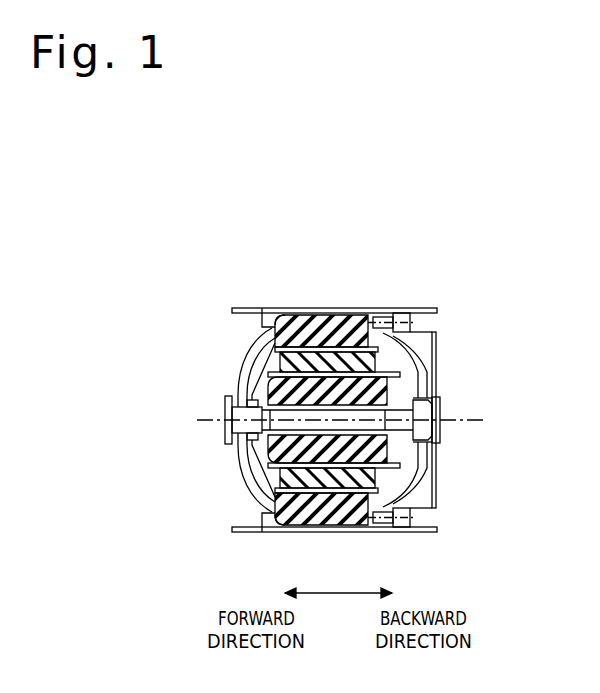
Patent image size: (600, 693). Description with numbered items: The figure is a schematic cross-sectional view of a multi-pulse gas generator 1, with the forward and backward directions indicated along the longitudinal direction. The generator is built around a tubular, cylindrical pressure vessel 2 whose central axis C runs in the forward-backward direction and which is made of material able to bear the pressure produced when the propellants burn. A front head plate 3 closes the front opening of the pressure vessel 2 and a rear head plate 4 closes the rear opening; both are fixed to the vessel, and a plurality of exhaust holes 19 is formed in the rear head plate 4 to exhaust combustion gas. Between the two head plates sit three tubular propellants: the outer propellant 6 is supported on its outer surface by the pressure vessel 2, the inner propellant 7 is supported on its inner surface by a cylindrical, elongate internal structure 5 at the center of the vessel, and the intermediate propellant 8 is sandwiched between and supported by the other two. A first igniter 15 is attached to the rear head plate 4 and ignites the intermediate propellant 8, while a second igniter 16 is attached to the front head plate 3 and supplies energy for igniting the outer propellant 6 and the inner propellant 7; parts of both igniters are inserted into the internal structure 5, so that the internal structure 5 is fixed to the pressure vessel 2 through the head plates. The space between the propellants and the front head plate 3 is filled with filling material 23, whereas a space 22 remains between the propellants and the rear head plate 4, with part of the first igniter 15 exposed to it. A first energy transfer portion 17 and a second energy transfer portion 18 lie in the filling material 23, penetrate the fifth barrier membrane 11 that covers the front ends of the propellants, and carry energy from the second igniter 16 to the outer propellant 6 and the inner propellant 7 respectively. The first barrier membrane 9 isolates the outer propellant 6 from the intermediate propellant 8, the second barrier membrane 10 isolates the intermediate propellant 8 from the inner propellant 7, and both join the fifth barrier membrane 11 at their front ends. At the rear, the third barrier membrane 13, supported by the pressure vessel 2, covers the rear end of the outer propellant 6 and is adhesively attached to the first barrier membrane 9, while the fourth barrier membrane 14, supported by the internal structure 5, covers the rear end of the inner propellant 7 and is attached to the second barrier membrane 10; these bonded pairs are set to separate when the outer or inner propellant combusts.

The multi-pulse gas generator 1 is at (447, 262).
The pressure vessel 2 is at (273, 313).
The front head plate 3 is at (256, 342).
The rear head plate 4 is at (405, 338).
The internal structure 5 is at (362, 440).
The outer propellant 6 is at (351, 314).
The inner propellant 7 is at (427, 412).
The intermediate propellant 8 is at (378, 356).
The first barrier membrane 9 is at (304, 314).
The second barrier membrane 10 is at (328, 314).
The fifth barrier membrane 11 is at (268, 378).
The third barrier membrane 13 is at (373, 314).
The fourth barrier membrane 14 is at (392, 390).
The first igniter 15 is at (438, 412).
The second igniter 16 is at (238, 430).
The first energy transfer portion 17 is at (258, 360).
The second energy transfer portion 18 is at (257, 478).
The exhaust holes 19 is at (417, 478).
The space 22 is at (398, 485).
The filling material 23 is at (248, 512).
The central axis C is at (349, 418).